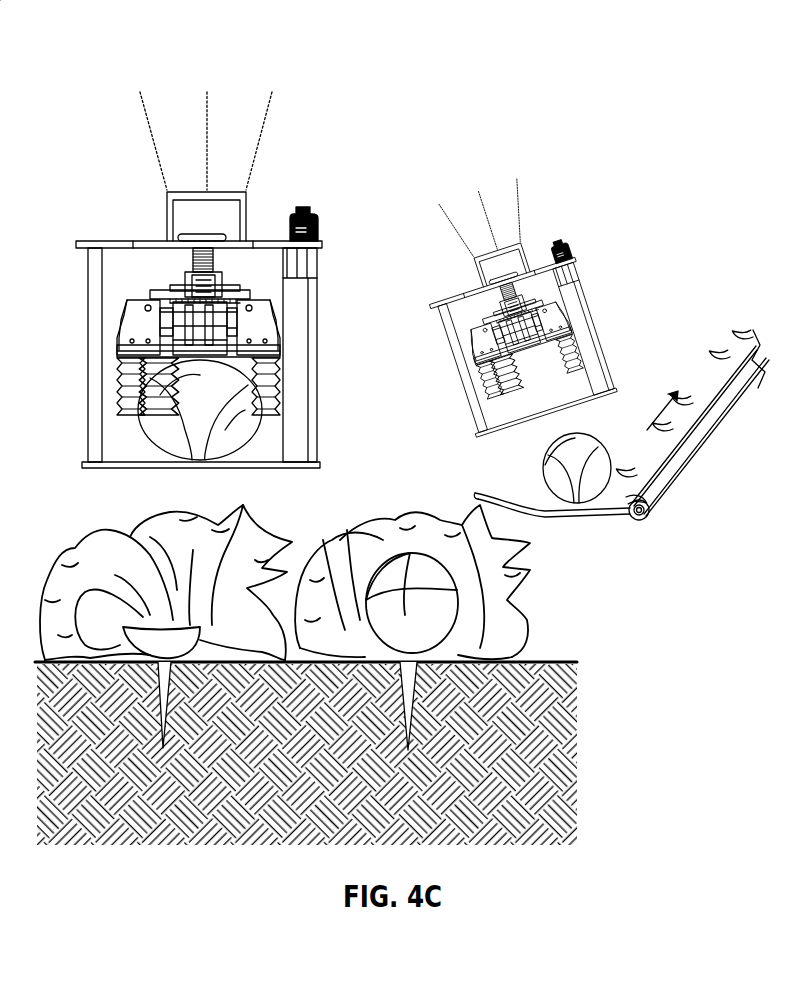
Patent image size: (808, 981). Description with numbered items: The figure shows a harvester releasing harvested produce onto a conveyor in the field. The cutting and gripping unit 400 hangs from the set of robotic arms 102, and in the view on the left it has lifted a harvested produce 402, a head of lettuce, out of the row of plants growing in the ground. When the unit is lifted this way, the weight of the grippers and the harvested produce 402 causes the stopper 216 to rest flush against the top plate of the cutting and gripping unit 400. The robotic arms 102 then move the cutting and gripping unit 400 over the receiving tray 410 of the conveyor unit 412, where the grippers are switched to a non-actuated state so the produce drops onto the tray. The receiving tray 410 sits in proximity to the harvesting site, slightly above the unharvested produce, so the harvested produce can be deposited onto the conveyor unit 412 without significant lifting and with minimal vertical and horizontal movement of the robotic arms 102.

The set of robotic arms 102 is at (207, 118).
The stopper 216 is at (177, 238).
The cutting and gripping unit 400 is at (358, 261).
The produce 402 is at (245, 412).
The receiving tray 410 is at (583, 518).
The conveyor unit 412 is at (767, 462).